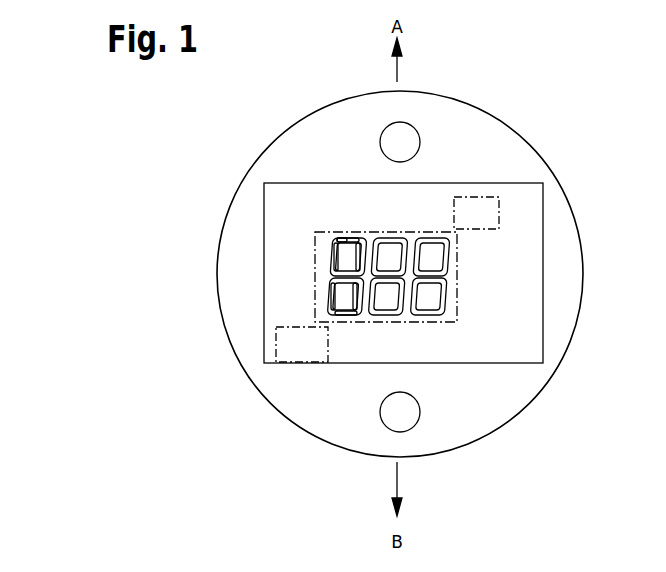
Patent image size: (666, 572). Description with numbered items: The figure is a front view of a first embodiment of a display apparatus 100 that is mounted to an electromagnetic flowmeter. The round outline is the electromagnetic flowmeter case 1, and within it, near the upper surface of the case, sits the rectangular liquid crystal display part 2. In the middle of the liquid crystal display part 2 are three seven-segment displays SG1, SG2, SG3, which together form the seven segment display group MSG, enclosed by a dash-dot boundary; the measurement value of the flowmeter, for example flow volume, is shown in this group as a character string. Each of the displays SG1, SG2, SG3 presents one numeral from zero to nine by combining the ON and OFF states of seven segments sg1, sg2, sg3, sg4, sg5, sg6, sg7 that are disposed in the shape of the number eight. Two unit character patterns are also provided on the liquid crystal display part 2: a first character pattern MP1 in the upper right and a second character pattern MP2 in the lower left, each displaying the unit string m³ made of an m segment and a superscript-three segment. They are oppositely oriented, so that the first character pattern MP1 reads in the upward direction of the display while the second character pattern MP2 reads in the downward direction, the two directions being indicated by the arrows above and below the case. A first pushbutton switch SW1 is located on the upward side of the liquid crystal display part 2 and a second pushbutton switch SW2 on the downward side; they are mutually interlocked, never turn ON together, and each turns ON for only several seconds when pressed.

The display apparatus 100 is at (240, 228).
The electromagnetic flowmeter case 1 is at (560, 188).
The liquid crystal display part 2 is at (528, 238).
The first pushbutton switch SW1 is at (407, 133).
The second pushbutton switch SW2 is at (392, 418).
The first character pattern MP1 is at (490, 195).
The second character pattern MP2 is at (305, 366).
The seven segment display group MSG is at (450, 322).
The seven-segment display SG1 is at (345, 238).
The seven-segment display SG2 is at (393, 238).
The seven-segment display SG3 is at (447, 250).
The segment sg1 is at (338, 240).
The segment sg2 is at (337, 250).
The segment sg3 is at (363, 246).
The segment sg4 is at (334, 292).
The segment sg5 is at (346, 314).
The segment sg6 is at (362, 300).
The segment sg7 is at (348, 238).